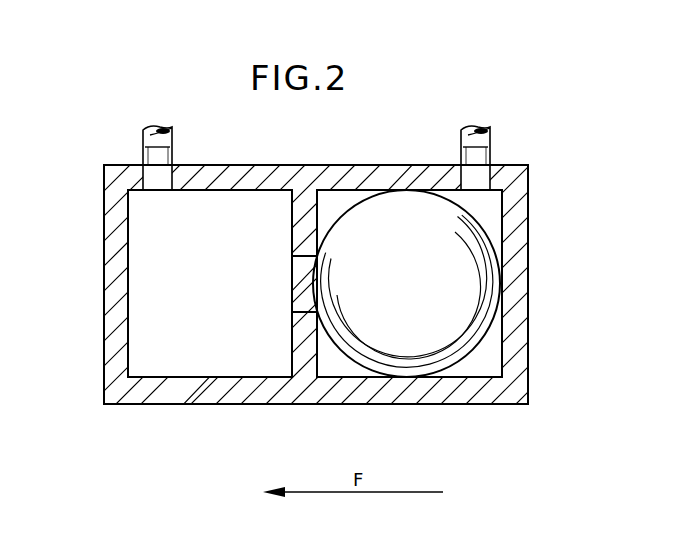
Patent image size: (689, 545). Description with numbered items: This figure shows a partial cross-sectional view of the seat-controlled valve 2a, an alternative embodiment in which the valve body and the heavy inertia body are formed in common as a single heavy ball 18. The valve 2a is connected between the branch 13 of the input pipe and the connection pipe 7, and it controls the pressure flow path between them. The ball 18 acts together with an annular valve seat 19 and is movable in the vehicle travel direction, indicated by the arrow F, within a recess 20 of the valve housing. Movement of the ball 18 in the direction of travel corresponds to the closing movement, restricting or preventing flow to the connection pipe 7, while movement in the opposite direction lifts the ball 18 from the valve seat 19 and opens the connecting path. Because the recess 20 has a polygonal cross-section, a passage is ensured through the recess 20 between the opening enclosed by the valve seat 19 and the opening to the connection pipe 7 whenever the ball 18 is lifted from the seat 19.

The seat-controlled valve 2a is at (528, 290).
The branch 13 is at (163, 142).
The connection pipe 7 is at (485, 142).
The heavy ball 18 is at (406, 283).
The annular valve seat 19 is at (306, 312).
The recess 20 is at (494, 367).